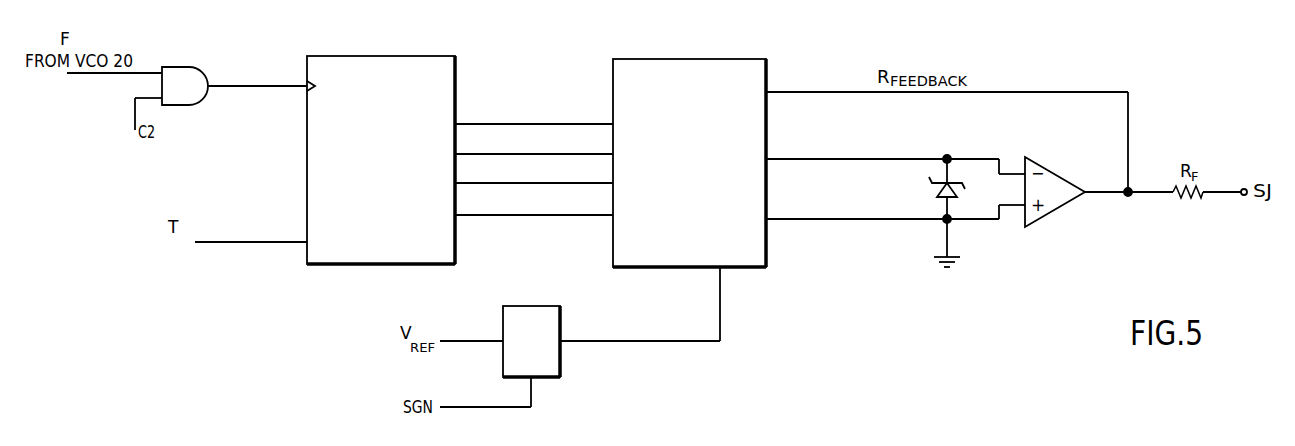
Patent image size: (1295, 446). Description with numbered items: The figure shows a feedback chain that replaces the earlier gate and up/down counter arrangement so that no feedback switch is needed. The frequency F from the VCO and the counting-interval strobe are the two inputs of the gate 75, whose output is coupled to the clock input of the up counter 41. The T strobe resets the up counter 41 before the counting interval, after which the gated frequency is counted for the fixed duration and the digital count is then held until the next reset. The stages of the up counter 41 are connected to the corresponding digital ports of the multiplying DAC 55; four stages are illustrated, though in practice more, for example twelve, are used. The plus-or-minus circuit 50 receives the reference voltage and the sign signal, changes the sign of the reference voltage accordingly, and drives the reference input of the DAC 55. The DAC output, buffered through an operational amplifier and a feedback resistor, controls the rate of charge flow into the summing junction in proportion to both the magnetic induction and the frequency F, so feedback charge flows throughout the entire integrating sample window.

The gate 75 is at (203, 67).
The up counter 41 is at (400, 56).
The multiplying DAC 55 is at (706, 59).
The +/− circuit 50 is at (527, 306).